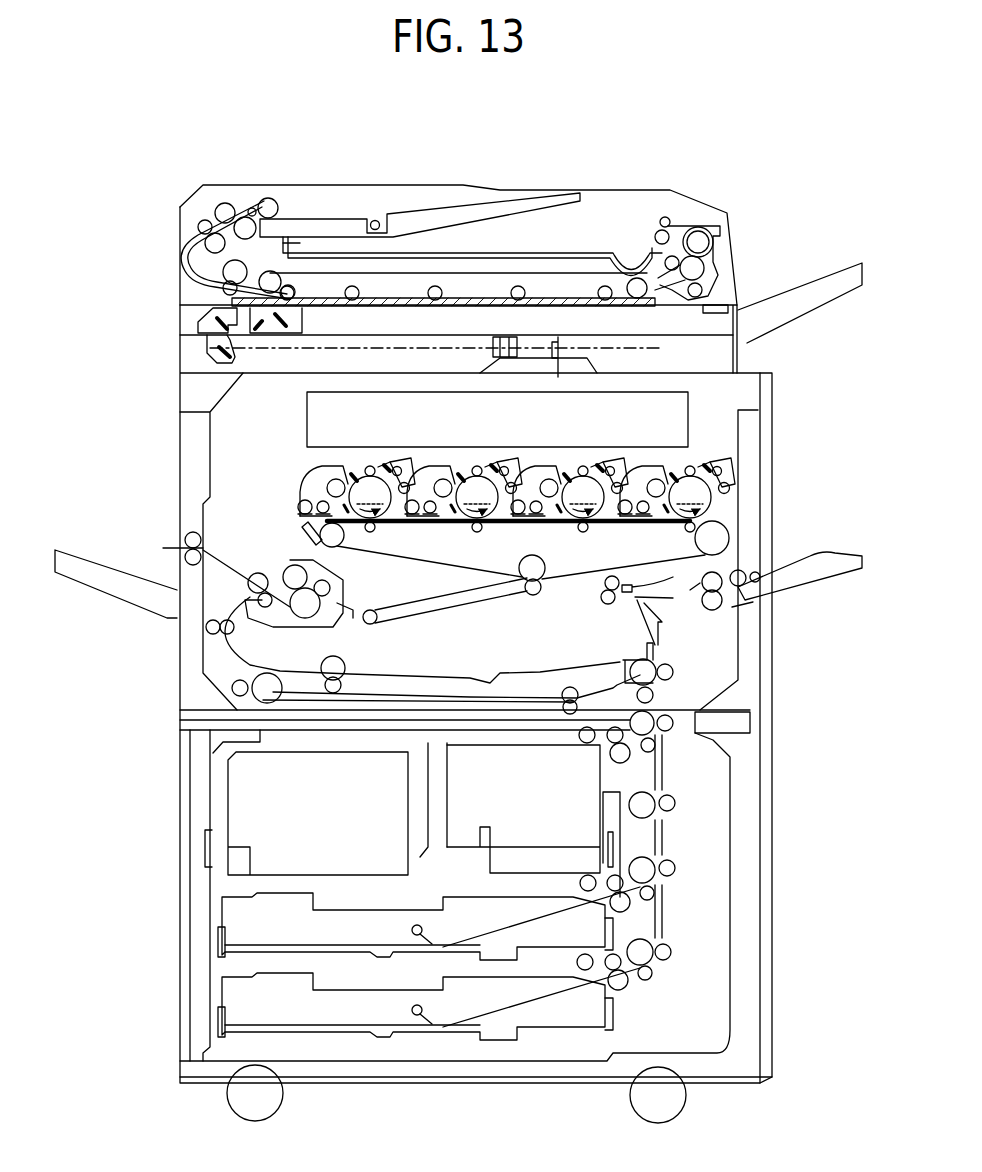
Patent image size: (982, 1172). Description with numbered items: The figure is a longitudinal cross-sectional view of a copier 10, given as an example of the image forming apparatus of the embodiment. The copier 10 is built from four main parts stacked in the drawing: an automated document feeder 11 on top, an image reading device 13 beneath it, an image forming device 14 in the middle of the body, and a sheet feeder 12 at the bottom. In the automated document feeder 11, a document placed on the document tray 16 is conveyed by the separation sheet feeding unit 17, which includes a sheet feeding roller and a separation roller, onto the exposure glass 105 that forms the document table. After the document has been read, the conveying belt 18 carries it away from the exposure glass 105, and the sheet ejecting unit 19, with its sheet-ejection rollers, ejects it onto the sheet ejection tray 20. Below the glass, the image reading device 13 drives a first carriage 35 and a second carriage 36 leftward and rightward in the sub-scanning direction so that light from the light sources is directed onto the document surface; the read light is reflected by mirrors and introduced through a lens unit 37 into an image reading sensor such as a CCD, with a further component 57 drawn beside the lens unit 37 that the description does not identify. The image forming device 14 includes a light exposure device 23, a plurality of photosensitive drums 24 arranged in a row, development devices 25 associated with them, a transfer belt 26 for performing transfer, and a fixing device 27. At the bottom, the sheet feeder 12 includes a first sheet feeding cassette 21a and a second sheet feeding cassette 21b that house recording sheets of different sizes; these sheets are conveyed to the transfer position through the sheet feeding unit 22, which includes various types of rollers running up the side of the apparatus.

The copier 10 is at (456, 183).
The automated document feeder 11 is at (175, 256).
The sheet feeder 12 is at (175, 886).
The image reading device 13 is at (175, 350).
The image forming device 14 is at (172, 634).
The document tray 16 is at (508, 190).
The separation sheet feeding unit 17 is at (213, 212).
The conveying belt 18 is at (468, 280).
The sheet ejecting unit 19 is at (722, 250).
The sheet ejection tray 20 is at (598, 253).
The first sheet feeding cassette 21a is at (240, 952).
The second sheet feeding cassette 21b is at (313, 1037).
The sheet feeding unit 22 is at (672, 853).
The light exposure device 23 is at (307, 421).
The photosensitive drums 24 is at (504, 498).
The development devices 25 is at (400, 460).
The transfer belt 26 is at (413, 570).
The fixing device 27 is at (278, 566).
The first carriage 35 is at (302, 316).
The second carriage 36 is at (237, 355).
The lens unit 37 is at (495, 336).
The image sensor 57 is at (560, 350).
The exposure glass 105 is at (552, 298).